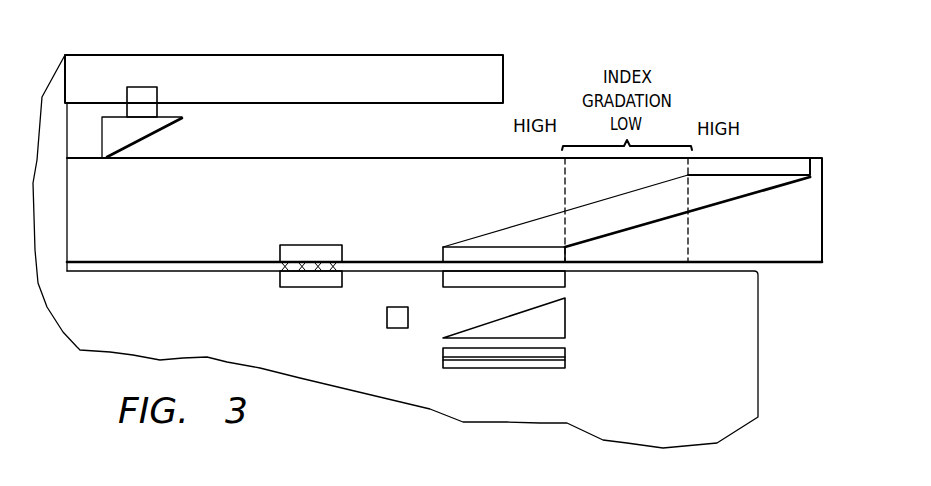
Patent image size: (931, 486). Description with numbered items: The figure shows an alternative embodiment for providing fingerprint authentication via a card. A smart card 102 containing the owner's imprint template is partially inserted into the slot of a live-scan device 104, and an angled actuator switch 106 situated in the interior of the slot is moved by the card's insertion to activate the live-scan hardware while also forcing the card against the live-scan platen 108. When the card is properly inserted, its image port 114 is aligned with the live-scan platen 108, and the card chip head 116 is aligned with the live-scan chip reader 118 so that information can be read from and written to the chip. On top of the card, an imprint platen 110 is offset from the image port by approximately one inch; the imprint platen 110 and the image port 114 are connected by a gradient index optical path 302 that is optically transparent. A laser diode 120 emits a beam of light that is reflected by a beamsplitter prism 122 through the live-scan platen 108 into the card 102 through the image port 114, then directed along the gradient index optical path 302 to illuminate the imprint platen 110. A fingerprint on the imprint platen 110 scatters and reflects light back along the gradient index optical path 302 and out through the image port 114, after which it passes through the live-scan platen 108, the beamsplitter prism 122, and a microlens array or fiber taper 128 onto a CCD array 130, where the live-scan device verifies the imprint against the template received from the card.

The card 102 is at (399, 156).
The live-scan device 104 is at (300, 55).
The actuator switch 106 is at (128, 96).
The live-scan platen 108 is at (567, 281).
The imprint platen 110 is at (790, 167).
The image port 114 is at (443, 253).
The card chip head 116 is at (279, 252).
The live-scan chip reader 118 is at (279, 280).
The laser diode 120 is at (386, 313).
The beamsplitter prism 122 is at (567, 318).
The microlens array or fiber taper 128 is at (567, 355).
The CCD array 130 is at (503, 366).
The gradient index optical path 302 is at (723, 192).